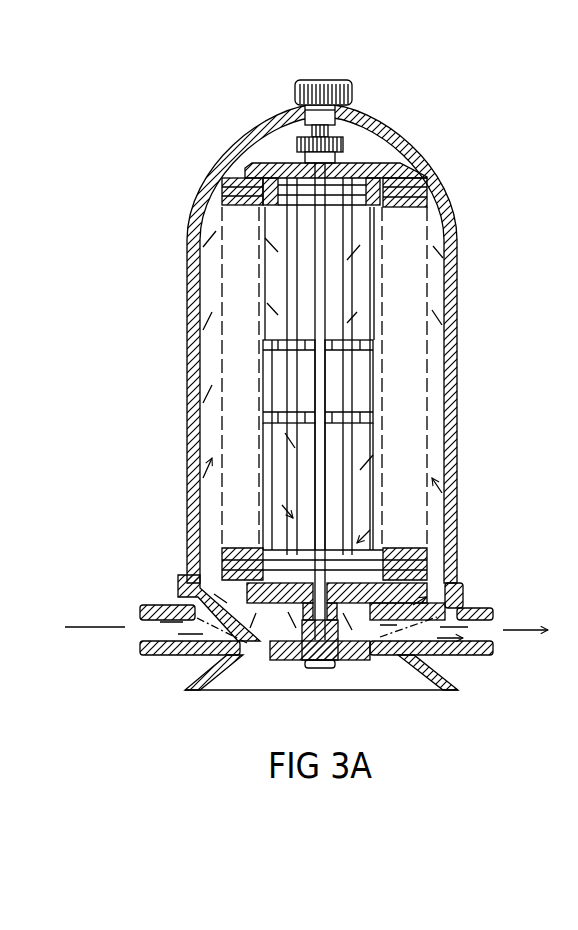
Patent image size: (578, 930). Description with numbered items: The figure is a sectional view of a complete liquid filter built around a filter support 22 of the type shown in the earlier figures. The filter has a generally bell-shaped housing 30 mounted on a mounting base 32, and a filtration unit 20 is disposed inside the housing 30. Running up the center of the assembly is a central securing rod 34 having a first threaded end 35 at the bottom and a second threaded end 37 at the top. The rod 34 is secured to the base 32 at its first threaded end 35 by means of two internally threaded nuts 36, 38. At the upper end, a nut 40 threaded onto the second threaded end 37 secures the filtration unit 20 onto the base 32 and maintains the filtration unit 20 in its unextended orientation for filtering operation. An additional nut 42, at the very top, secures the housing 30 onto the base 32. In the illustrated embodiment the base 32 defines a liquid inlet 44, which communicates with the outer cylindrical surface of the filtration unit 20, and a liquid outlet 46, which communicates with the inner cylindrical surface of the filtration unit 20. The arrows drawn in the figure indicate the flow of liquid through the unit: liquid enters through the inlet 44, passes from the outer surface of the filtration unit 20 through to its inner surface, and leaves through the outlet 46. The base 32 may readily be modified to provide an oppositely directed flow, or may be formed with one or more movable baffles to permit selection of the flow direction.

The filtration unit 20 is at (433, 220).
The filter support 22 is at (256, 342).
The bell-shaped housing 30 is at (457, 248).
The mounting base 32 is at (487, 596).
The central securing rod 34 is at (325, 392).
The first threaded end 35 is at (217, 655).
The internally threaded nut 36 is at (223, 575).
The second threaded end 37 is at (331, 127).
The internally threaded nut 38 is at (400, 657).
The nut 40 is at (298, 138).
The additional nut 42 is at (338, 81).
The liquid inlet 44 is at (158, 607).
The liquid outlet 46 is at (493, 612).